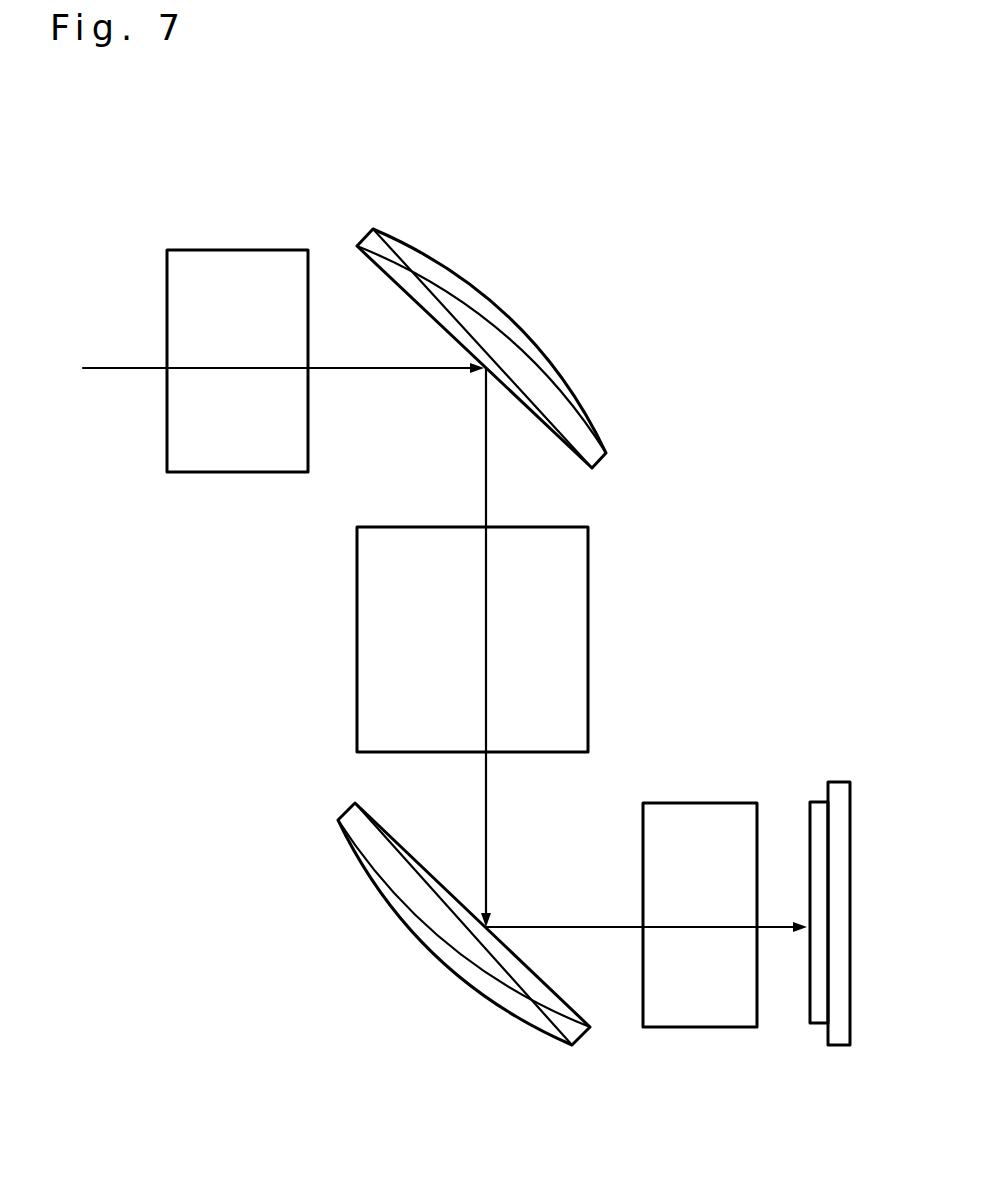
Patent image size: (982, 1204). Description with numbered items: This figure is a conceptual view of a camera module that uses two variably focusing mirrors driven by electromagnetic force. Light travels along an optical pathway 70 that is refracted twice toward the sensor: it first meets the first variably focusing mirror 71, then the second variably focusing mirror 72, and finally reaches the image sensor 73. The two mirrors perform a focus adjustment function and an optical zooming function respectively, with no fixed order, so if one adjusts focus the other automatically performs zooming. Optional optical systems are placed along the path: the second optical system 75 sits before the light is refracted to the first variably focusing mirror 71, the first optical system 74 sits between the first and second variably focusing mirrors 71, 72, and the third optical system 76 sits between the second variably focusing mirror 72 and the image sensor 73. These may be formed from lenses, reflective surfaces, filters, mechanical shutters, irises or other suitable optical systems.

The optical pathway 70 is at (259, 369).
The first variably focusing mirror 71 is at (530, 326).
The second variably focusing mirror 72 is at (430, 949).
The image sensor 73 is at (838, 798).
The first optical system 74 is at (375, 630).
The second optical system 75 is at (218, 456).
The third optical system 76 is at (687, 825).